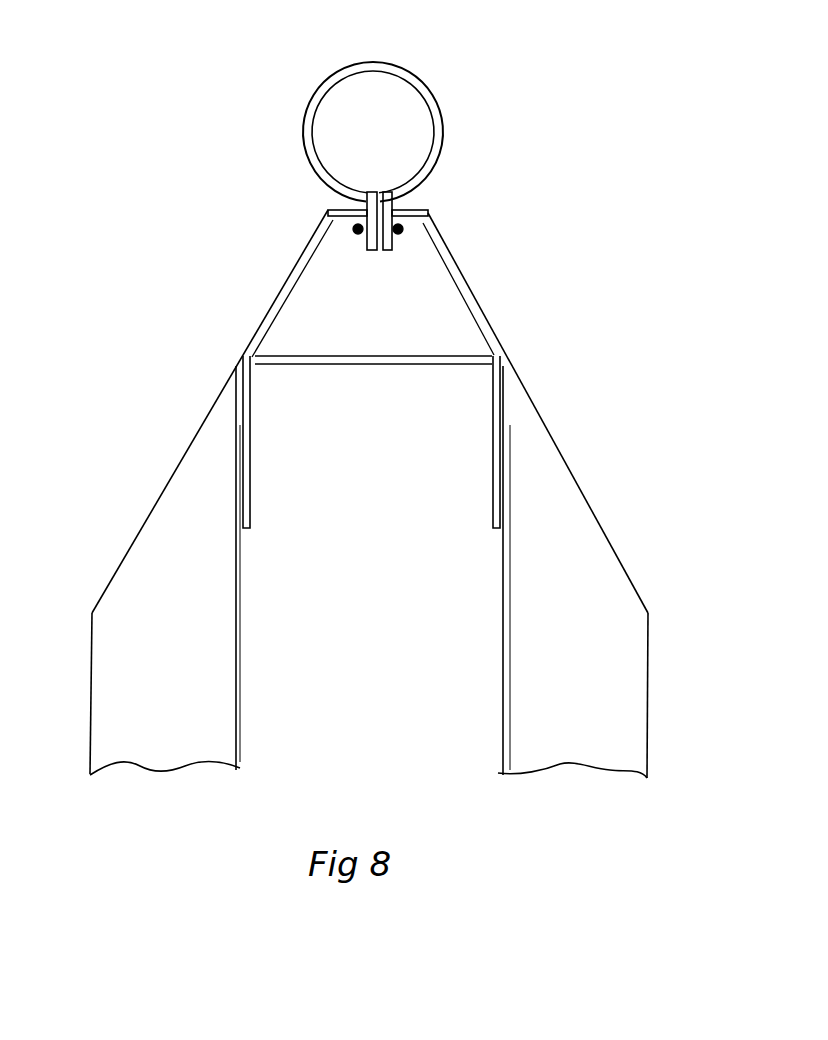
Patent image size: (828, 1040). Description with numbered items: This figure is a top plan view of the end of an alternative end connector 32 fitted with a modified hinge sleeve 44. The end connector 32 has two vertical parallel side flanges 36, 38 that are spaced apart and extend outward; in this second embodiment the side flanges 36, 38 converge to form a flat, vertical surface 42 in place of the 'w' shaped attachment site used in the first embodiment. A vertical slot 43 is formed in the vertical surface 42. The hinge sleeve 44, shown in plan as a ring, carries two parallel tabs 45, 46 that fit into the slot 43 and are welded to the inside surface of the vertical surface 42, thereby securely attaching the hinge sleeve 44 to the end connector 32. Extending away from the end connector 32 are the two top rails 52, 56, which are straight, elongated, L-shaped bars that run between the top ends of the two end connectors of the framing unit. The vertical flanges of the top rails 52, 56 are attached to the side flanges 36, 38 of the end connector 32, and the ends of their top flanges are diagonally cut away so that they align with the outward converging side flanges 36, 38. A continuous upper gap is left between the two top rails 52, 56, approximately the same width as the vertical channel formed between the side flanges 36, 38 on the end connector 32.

The end connector 32 is at (542, 143).
The side flange 36 is at (490, 457).
The side flange 38 is at (255, 463).
The vertical surface 42 is at (340, 207).
The vertical slot 43 is at (399, 204).
The hinge sleeve 44 is at (308, 95).
The tab 45 is at (397, 247).
The tab 46 is at (362, 233).
The top rail 52 is at (158, 527).
The top rail 56 is at (588, 530).